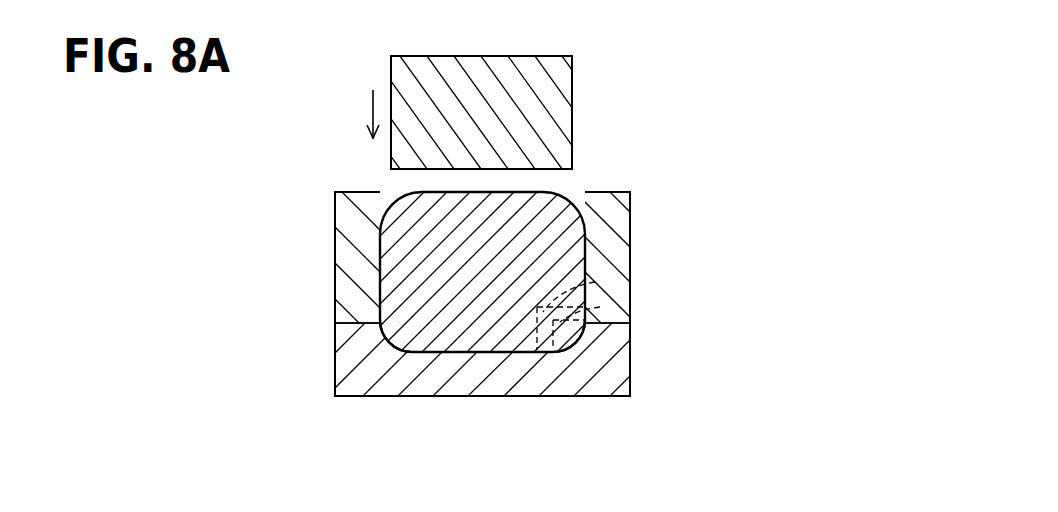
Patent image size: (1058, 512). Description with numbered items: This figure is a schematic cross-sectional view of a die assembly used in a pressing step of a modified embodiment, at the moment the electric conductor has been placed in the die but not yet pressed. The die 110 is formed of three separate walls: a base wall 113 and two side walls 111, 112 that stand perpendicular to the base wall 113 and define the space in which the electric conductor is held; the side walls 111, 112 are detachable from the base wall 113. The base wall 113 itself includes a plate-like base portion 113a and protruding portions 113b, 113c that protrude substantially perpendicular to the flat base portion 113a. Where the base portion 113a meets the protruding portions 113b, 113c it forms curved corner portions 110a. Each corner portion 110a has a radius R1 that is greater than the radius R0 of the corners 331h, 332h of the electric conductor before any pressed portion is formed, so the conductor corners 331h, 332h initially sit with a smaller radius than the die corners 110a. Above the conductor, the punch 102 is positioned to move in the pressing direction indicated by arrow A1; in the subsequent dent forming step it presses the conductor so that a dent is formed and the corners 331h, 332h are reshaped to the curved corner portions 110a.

The punch 102 is at (562, 73).
The die 110 is at (490, 304).
The curved corner portion 110a is at (380, 352).
The side wall 111 is at (357, 264).
The side wall 112 is at (613, 258).
The base wall 113 is at (598, 388).
The base portion 113a is at (497, 398).
The protruding portion 113b is at (385, 342).
The protruding portion 113c is at (590, 340).
The corner of the electric conductor 331h is at (490, 319).
The corner of the electric conductor 332h is at (335, 323).
The radius of the conductor corner R0 is at (595, 282).
The radius of the corner portion R1 is at (600, 307).
The pressing direction A1 is at (373, 113).